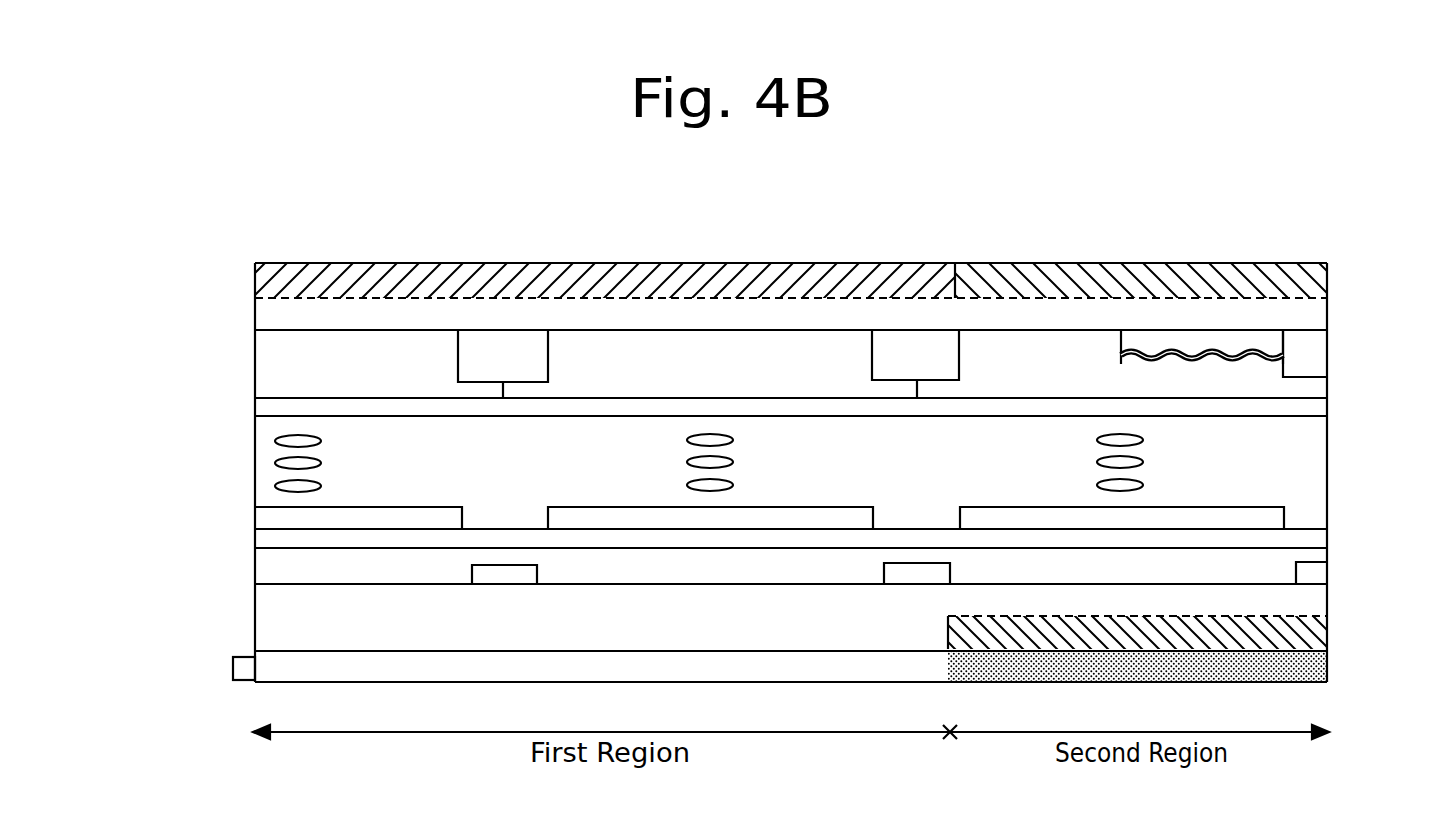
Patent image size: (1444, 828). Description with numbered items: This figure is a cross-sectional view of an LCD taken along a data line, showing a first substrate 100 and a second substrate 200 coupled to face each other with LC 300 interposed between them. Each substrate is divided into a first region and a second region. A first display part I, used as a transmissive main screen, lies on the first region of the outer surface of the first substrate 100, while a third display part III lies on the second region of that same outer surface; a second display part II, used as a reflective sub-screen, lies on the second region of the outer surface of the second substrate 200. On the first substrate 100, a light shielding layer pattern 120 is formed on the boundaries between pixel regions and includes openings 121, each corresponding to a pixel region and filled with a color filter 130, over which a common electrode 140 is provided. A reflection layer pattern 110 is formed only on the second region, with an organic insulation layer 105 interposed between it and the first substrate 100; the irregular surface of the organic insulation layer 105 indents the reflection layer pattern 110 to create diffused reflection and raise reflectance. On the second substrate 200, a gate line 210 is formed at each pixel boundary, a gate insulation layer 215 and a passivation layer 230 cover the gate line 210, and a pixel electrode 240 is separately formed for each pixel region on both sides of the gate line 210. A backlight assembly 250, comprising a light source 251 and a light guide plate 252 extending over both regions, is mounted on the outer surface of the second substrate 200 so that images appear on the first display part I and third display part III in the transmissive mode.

The first display part I is at (255, 282).
The second display part II is at (1318, 633).
The third display part III is at (1320, 278).
The first substrate 100 is at (1318, 316).
The organic insulation layer 105 is at (1164, 337).
The reflection layer pattern 110 is at (1224, 342).
The light shielding layer pattern 120 is at (1318, 352).
The openings 121 is at (872, 355).
The color filter 130 is at (1318, 383).
The common electrode 140 is at (1318, 413).
The second substrate 200 is at (1317, 598).
The gate line 210 is at (1317, 575).
The gate insulation layer 215 is at (1317, 555).
The passivation layer 230 is at (1317, 537).
The pixel electrode 240 is at (1290, 521).
The backlight assembly 250 is at (145, 658).
The light source 251 is at (233, 666).
The light guide plate 252 is at (292, 677).
The LC 300 is at (322, 463).